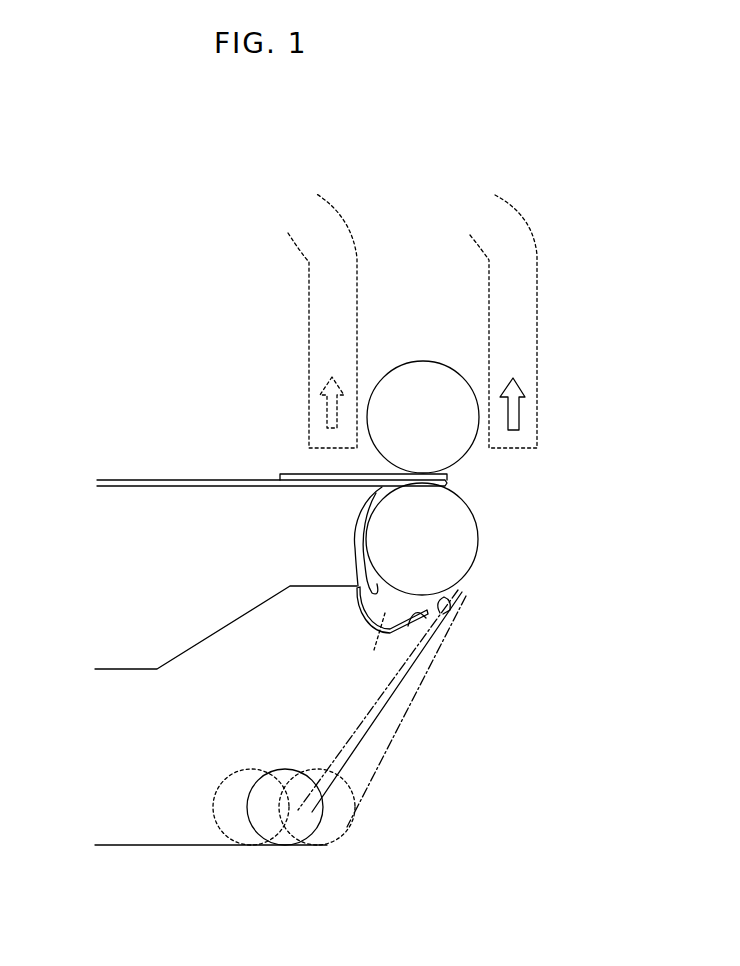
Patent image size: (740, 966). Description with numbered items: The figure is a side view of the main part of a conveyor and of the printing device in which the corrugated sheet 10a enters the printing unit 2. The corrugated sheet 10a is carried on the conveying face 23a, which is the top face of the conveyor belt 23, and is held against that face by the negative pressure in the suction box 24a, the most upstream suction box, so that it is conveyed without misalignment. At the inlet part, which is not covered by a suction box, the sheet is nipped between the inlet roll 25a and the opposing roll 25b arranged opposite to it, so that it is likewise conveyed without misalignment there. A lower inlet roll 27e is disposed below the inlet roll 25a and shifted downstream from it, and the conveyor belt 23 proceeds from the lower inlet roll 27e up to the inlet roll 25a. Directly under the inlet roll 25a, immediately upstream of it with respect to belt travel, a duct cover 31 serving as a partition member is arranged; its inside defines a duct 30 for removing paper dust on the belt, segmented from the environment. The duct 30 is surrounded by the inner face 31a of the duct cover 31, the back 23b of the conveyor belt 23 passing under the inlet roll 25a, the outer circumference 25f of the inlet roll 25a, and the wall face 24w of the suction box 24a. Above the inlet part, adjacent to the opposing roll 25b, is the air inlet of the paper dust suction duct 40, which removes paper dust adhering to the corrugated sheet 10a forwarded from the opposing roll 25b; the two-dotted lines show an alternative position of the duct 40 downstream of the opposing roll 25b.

The printing unit 2 is at (165, 455).
The corrugated sheet 10a is at (281, 473).
The conveyor belt 23 is at (382, 697).
The conveying face 23a is at (205, 479).
The back of the conveyor belt 23b is at (447, 623).
The suction box 24a is at (133, 657).
The wall face 24w is at (355, 590).
The inlet roll 25a is at (462, 520).
The opposing roll 25b is at (423, 361).
The outer circumference 25f is at (455, 604).
The lower inlet roll 27e is at (335, 825).
The duct 30 is at (384, 634).
The duct cover 31 is at (362, 618).
The inner face 31a is at (430, 650).
The paper dust suction duct 40 is at (308, 330).